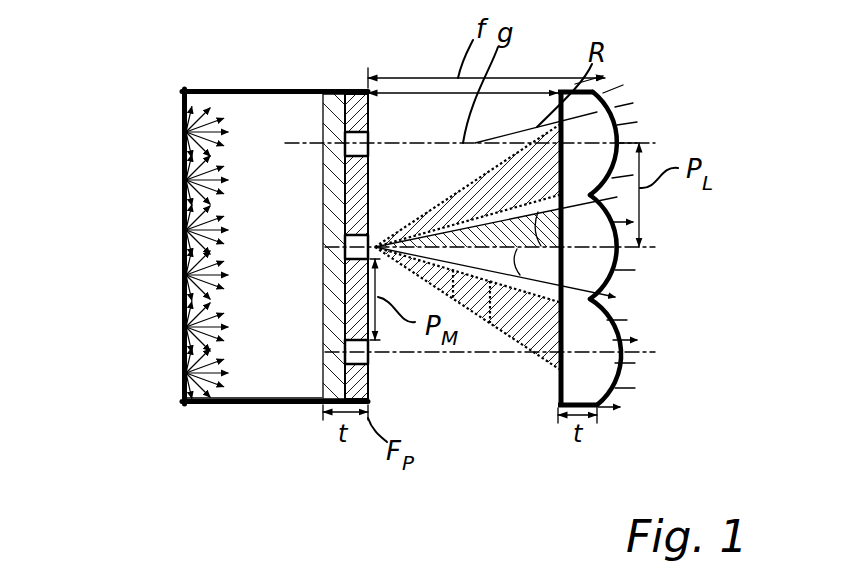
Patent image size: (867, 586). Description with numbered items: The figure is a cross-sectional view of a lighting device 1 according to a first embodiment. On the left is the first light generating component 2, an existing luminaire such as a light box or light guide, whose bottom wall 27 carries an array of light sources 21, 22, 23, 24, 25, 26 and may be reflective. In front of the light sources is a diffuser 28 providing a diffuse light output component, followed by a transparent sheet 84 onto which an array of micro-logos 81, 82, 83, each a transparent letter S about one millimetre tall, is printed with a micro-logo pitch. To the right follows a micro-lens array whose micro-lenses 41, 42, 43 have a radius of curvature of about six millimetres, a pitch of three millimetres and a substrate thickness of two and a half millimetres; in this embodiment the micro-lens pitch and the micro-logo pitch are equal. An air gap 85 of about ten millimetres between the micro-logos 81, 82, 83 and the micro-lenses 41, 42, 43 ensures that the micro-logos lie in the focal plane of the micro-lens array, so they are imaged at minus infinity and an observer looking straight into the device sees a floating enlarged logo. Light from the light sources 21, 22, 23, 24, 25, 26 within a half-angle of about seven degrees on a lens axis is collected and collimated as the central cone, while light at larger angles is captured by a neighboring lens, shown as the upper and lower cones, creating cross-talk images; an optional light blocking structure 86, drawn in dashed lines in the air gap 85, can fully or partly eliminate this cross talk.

The lighting device 1 is at (113, 74).
The first light generating component 2 is at (222, 89).
The light source 21 is at (186, 132).
The light source 22 is at (186, 180).
The light source 23 is at (186, 230).
The light source 24 is at (186, 275).
The light source 25 is at (186, 327).
The light source 26 is at (186, 373).
The bottom wall 27 is at (188, 352).
The diffuser 28 is at (333, 235).
The micro-lens 41 is at (618, 122).
The micro-lens 42 is at (617, 280).
The micro-lens 43 is at (617, 373).
The micro-logo 81 is at (369, 357).
The micro-logo 82 is at (368, 241).
The micro-logo 83 is at (369, 143).
The transparent sheet 84 is at (357, 318).
The air gap 85 is at (505, 390).
The light blocking structure 86 is at (472, 313).